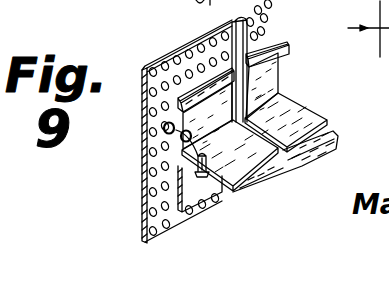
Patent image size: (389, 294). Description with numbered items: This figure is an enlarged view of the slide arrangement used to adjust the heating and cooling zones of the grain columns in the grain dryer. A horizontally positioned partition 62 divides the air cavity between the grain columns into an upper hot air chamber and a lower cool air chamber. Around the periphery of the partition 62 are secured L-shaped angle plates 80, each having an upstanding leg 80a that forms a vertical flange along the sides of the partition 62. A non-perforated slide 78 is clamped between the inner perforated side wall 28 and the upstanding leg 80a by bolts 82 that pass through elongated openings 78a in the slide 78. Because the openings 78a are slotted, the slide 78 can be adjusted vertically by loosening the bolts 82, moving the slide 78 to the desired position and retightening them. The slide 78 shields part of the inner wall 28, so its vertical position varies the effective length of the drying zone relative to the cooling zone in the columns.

The inner perforated side wall 28 is at (200, 40).
The horizontally positioned partition 62 is at (300, 157).
The slide 78 is at (202, 86).
The elongated opening 78a is at (177, 164).
The angle plate 80 is at (297, 113).
The upstanding leg 80a is at (278, 78).
The bolt 82 is at (164, 125).